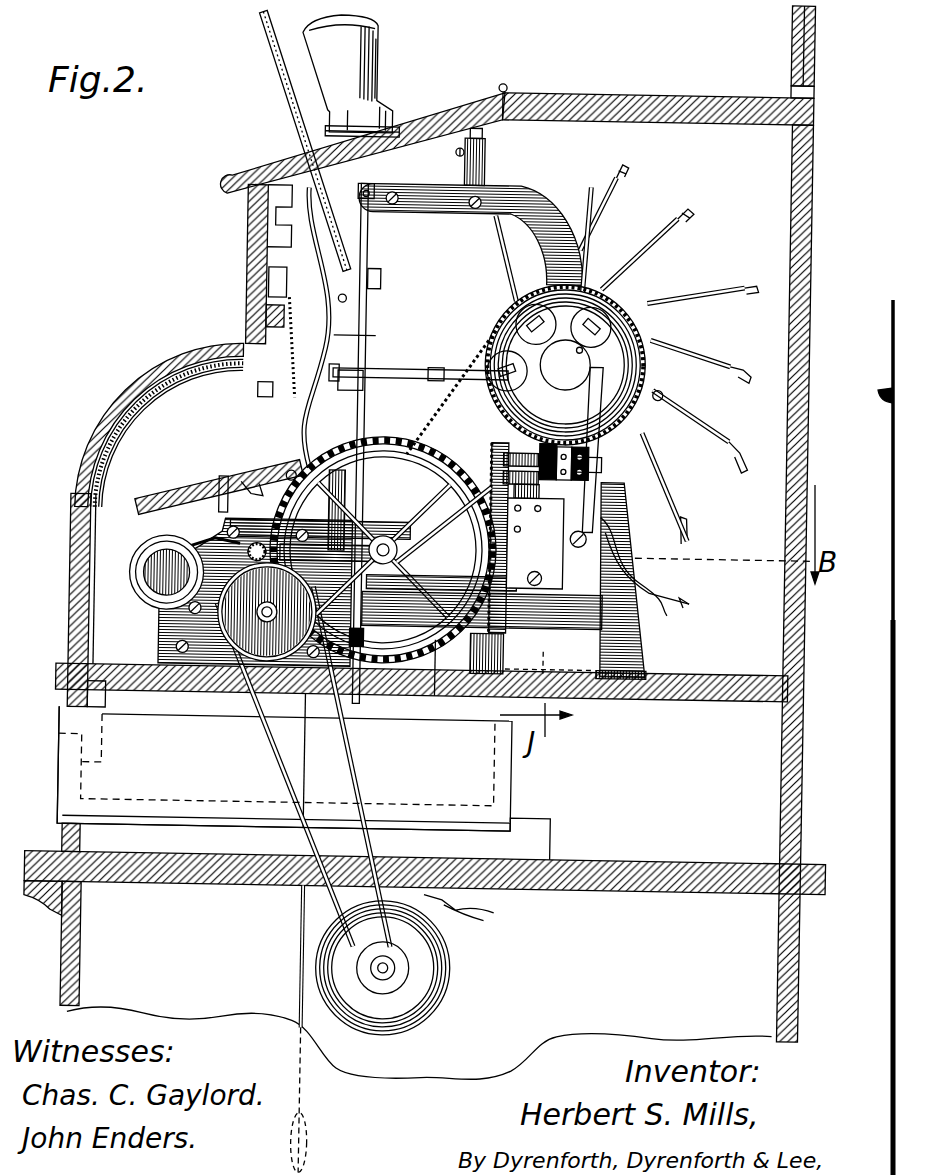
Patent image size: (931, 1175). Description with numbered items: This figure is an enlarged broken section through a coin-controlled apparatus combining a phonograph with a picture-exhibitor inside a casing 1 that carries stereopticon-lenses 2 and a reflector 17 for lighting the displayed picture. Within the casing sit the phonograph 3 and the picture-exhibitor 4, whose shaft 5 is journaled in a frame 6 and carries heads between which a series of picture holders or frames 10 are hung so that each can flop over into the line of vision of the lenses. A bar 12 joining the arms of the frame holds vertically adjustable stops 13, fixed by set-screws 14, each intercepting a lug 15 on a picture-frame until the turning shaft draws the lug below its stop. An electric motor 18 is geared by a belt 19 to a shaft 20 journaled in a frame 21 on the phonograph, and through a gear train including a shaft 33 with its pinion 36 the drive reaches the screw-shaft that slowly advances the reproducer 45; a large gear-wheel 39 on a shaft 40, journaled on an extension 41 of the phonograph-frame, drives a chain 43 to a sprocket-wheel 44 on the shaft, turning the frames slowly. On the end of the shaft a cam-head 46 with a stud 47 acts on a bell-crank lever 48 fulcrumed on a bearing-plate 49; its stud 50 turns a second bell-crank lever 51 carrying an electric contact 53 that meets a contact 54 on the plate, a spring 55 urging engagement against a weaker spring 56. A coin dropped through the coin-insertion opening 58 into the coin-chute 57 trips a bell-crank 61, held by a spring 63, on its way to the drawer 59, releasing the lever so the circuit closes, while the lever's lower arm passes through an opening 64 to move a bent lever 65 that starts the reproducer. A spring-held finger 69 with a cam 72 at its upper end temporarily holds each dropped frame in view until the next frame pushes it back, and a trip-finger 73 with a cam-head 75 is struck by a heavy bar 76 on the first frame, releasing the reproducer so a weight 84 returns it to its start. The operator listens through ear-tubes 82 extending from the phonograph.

The casing 1 is at (262, 328).
The stereopticon-lenses 2 is at (375, 50).
The phonograph 3 is at (193, 552).
The picture-exhibitor 4 is at (446, 333).
The shaft 5 is at (565, 365).
The frame 6 is at (526, 212).
The picture holder or frame 10 is at (592, 226).
The bar 12 is at (484, 164).
The stops 13 is at (484, 134).
The set-screws 14 is at (457, 152).
The lug 15 is at (682, 213).
The reflector 17 is at (252, 256).
The electric motor 18 is at (425, 985).
The belt 19 is at (362, 792).
The shaft 20 is at (267, 612).
The frame 21 is at (173, 604).
The shaft 33 is at (255, 591).
The pinion 36 is at (165, 584).
The large gear-wheel 39 is at (437, 650).
The shaft 40 is at (441, 596).
The extension 41 is at (398, 548).
The chain 43 is at (504, 296).
The sprocket-wheel 44 is at (650, 323).
The reproducer 45 is at (182, 496).
The cam-head 46 is at (565, 370).
The stud 47 is at (642, 294).
The bell-crank lever 48 is at (663, 392).
The bearing-plate 49 is at (636, 642).
The stud 50 is at (602, 458).
The bell-crank lever 51 is at (646, 456).
The electric contact 53 is at (606, 486).
The contact 54 is at (402, 503).
The spring 55 is at (551, 581).
The spring 56 is at (642, 606).
The coin-chute 57 is at (382, 700).
The coin-insertion opening 58 is at (385, 124).
The drawer 59 is at (276, 759).
The bell-crank 61 is at (296, 566).
The spring 63 is at (509, 651).
The opening 64 is at (668, 586).
The bent lever 65 is at (482, 607).
The finger 69 is at (418, 344).
The cam 72 is at (375, 286).
The trip-finger 73 is at (316, 388).
The cam-head 75 is at (250, 410).
The bar 76 is at (345, 302).
The ear-tubes 82 is at (312, 112).
The weight 84 is at (312, 1168).